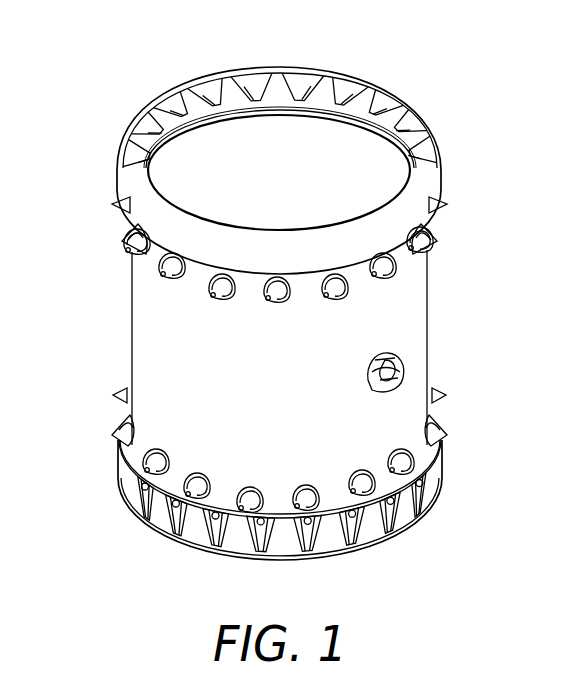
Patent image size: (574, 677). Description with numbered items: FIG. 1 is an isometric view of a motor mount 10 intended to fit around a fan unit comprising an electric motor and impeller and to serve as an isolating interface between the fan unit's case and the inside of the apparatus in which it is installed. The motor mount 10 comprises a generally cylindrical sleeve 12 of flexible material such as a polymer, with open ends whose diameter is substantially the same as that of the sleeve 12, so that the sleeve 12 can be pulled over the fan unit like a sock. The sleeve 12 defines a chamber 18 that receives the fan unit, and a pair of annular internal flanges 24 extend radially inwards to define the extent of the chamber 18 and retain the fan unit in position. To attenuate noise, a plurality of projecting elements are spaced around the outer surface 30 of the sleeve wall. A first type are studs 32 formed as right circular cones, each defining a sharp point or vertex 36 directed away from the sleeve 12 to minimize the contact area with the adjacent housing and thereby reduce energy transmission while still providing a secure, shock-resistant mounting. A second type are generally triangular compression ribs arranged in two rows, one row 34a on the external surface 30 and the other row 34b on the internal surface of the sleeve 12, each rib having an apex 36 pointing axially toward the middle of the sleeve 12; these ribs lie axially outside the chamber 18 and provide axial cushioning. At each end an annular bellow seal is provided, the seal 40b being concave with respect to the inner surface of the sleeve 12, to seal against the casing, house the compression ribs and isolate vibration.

The motor mount 10 is at (153, 61).
The sleeve 12 is at (436, 305).
The chamber 18 is at (223, 182).
The annular internal flange 24 is at (358, 132).
The outer surface 30 is at (196, 381).
The stud 32 is at (446, 204).
The row of compression ribs on external surface 34a is at (390, 527).
The row of compression ribs on internal surface 34b is at (257, 87).
The apex 36 is at (300, 102).
The bellow seal 40b is at (128, 163).